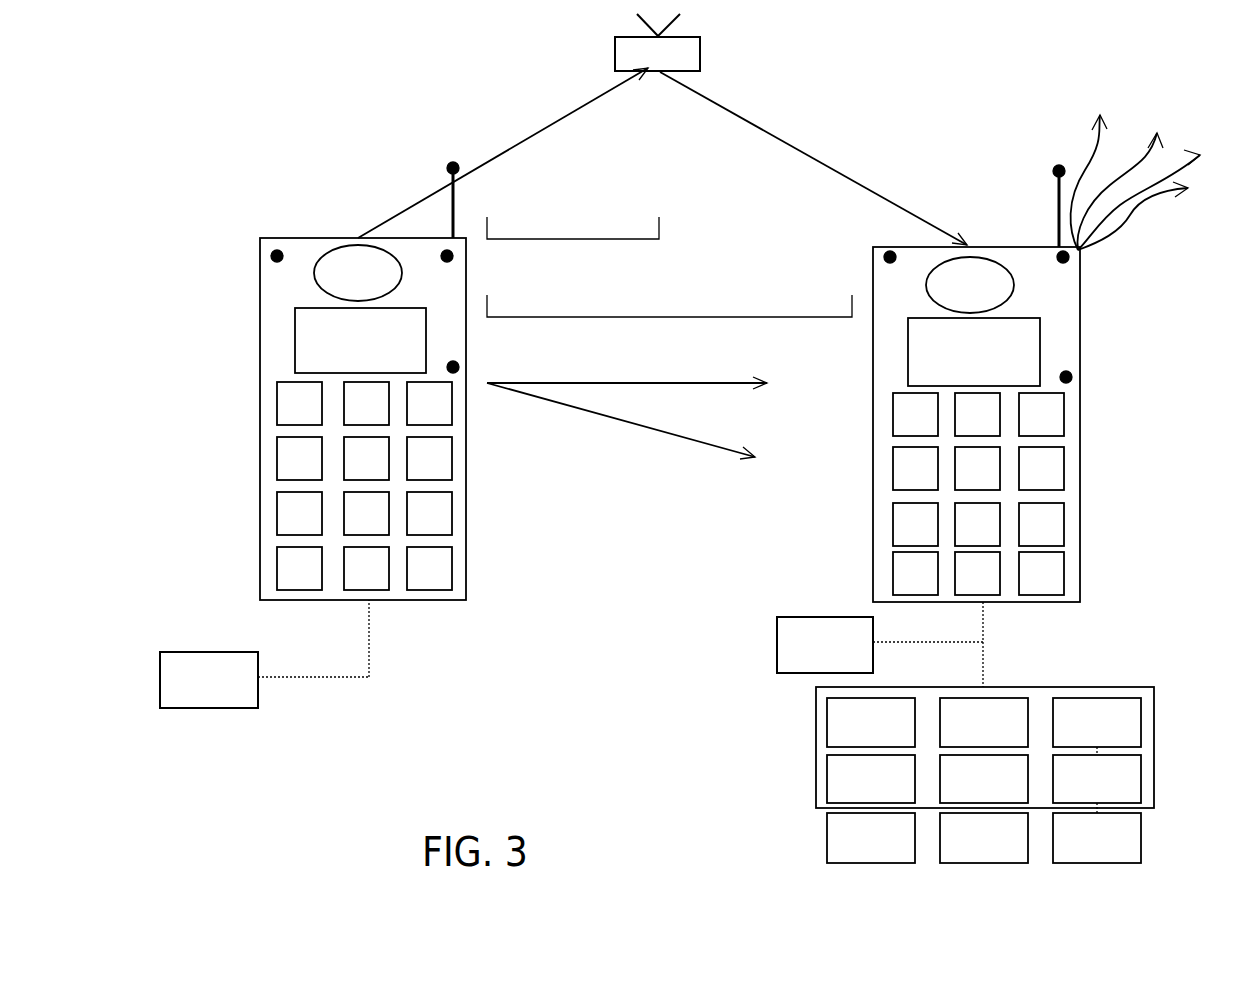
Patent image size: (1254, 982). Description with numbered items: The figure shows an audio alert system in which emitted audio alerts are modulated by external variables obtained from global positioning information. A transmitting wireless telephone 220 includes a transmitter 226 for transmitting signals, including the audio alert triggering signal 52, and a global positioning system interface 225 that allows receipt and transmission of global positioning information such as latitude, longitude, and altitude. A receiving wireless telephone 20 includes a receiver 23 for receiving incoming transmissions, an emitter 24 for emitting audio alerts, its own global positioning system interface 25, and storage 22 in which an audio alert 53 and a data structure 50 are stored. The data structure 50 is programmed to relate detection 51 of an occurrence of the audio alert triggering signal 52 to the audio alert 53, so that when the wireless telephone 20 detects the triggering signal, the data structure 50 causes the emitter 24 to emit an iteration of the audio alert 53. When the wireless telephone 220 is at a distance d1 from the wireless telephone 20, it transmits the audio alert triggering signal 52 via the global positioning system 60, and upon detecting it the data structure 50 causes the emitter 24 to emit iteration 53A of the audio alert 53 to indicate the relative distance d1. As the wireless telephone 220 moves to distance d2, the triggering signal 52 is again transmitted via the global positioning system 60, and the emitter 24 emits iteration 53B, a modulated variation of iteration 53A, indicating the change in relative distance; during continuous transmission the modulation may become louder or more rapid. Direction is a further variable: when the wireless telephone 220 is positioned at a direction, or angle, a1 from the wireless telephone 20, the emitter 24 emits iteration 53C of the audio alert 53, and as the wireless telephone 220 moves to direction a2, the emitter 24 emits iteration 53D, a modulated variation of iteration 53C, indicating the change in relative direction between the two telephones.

The global positioning system 60 is at (700, 54).
The audio alert triggering signal 52 is at (525, 140).
The wireless telephone 220 is at (259, 271).
The transmitter 226 is at (358, 238).
The global positioning system interface 225 is at (160, 677).
The distance d1 is at (553, 239).
The distance d2 is at (553, 317).
The direction a1 is at (587, 383).
The direction a2 is at (600, 413).
The wireless telephone 20 is at (1080, 332).
The receiver 23 is at (884, 258).
The emitter 24 is at (1068, 260).
The iteration of audio alert 53A is at (1096, 173).
The iteration of audio alert 53B is at (1125, 182).
The iteration of audio alert 53C is at (1155, 198).
The iteration of audio alert 53D is at (1150, 215).
The global positioning system interface 25 is at (777, 642).
The storage 22 is at (816, 746).
The audio alert 53 is at (1097, 726).
The data structure 50 is at (1097, 784).
The detection 51 is at (1097, 838).